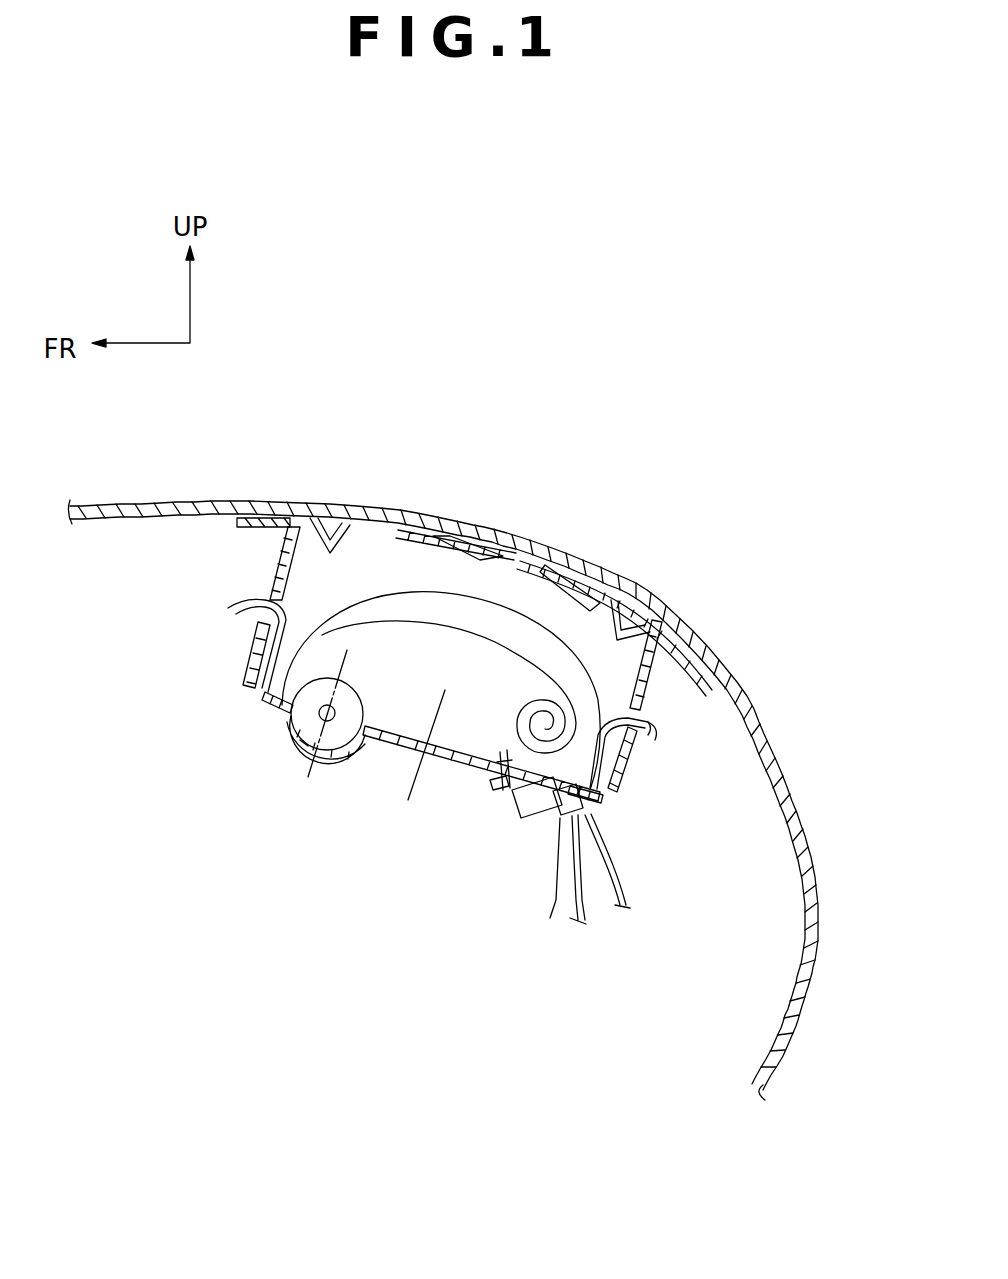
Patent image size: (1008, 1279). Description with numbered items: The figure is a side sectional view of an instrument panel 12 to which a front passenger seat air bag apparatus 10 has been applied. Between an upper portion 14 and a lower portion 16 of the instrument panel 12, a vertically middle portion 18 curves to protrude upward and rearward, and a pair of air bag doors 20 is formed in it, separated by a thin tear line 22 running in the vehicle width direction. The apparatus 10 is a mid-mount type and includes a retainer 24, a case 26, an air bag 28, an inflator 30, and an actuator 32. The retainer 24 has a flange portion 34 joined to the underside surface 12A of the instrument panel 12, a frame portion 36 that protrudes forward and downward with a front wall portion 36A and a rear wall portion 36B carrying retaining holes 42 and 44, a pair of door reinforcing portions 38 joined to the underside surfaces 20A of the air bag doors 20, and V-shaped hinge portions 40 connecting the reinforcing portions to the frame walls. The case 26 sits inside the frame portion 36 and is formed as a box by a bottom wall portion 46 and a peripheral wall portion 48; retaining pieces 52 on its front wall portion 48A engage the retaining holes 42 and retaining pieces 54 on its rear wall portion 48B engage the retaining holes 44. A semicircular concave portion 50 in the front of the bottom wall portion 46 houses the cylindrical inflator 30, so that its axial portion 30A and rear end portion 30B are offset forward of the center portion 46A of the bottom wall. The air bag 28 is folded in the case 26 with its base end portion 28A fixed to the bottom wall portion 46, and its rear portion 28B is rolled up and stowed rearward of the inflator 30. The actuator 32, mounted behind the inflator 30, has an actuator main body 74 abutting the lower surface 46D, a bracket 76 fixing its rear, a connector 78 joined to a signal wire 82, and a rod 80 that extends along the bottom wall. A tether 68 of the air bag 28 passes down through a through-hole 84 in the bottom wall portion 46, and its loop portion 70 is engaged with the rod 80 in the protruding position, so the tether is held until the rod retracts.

The front passenger seat air bag apparatus 10 is at (168, 632).
The instrument panel 12 is at (205, 503).
The underside surface 12A is at (190, 530).
The upper portion 14 is at (150, 503).
The lower portion 16 is at (817, 960).
The vertically middle portion 18 is at (545, 553).
The air bag doors 20 is at (430, 528).
The underside surfaces 20A is at (435, 552).
The tear line 22 is at (515, 548).
The retainer 24 is at (270, 518).
The case 26 is at (420, 775).
The air bag 28 is at (380, 593).
The base end portion 28A is at (358, 752).
The rear portion 28B is at (650, 690).
The inflator 30 is at (348, 682).
The axial portion 30A is at (300, 742).
The rear end portion 30B is at (370, 712).
The actuator 32 is at (532, 811).
The flange portion 34 is at (248, 528).
The frame portion 36 is at (268, 598).
The front wall portion 36A is at (250, 655).
The rear wall portion 36B is at (640, 765).
The door reinforcing portions 38 is at (470, 532).
The hinge portions 40 is at (330, 552).
The retaining holes 42 is at (262, 614).
The retaining holes 44 is at (657, 732).
The bottom wall portion 46 is at (455, 755).
The center portion 46A is at (449, 725).
The lower surface 46D is at (432, 830).
The peripheral wall portion 48 is at (262, 705).
The front wall portion 48A is at (245, 682).
The rear wall portion 48B is at (630, 792).
The concave portion 50 is at (305, 745).
The retaining pieces 52 is at (250, 632).
The retaining pieces 54 is at (660, 760).
The tether 68 is at (482, 815).
The loop portion 70 is at (510, 830).
The actuator main body 74 is at (540, 835).
The bracket 76 is at (565, 905).
The connector 78 is at (620, 820).
The rod 80 is at (505, 828).
The signal wire 82 is at (628, 908).
The through-hole 84 is at (503, 775).